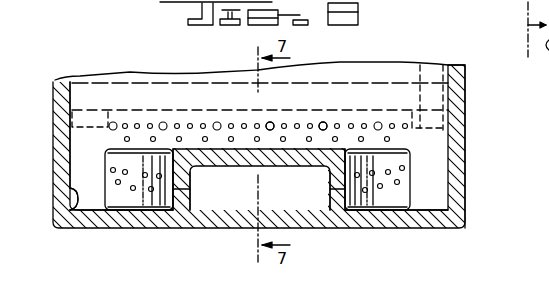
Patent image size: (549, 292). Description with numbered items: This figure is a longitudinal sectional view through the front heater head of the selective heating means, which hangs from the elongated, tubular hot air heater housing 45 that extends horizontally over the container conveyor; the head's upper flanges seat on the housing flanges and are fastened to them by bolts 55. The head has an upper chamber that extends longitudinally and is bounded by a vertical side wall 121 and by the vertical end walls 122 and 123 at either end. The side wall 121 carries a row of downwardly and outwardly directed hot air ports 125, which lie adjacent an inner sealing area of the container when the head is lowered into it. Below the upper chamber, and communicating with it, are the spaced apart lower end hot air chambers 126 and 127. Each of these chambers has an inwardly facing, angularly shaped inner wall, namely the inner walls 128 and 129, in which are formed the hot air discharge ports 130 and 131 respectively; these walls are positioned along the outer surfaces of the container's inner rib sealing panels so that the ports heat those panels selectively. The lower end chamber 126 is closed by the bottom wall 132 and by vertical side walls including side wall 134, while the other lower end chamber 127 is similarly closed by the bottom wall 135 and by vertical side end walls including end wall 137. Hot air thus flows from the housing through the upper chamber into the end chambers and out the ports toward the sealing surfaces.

The hot air heater housing 45 is at (473, 75).
The bolts 55 is at (466, 115).
The vertical side wall 121 is at (164, 118).
The vertical end wall 122 is at (54, 94).
The vertical end wall 123 is at (460, 143).
The hot air ports 125 is at (273, 123).
The lower end hot air chamber 126 is at (78, 209).
The lower end hot air chamber 127 is at (440, 194).
The inner wall 128 is at (180, 209).
The inner wall 129 is at (337, 208).
The hot air discharge ports 130 is at (151, 192).
The hot air discharge ports 131 is at (381, 189).
The bottom wall 132 is at (123, 221).
The vertical side wall 134 is at (83, 163).
The bottom wall 135 is at (438, 221).
The vertical side end wall 137 is at (430, 179).